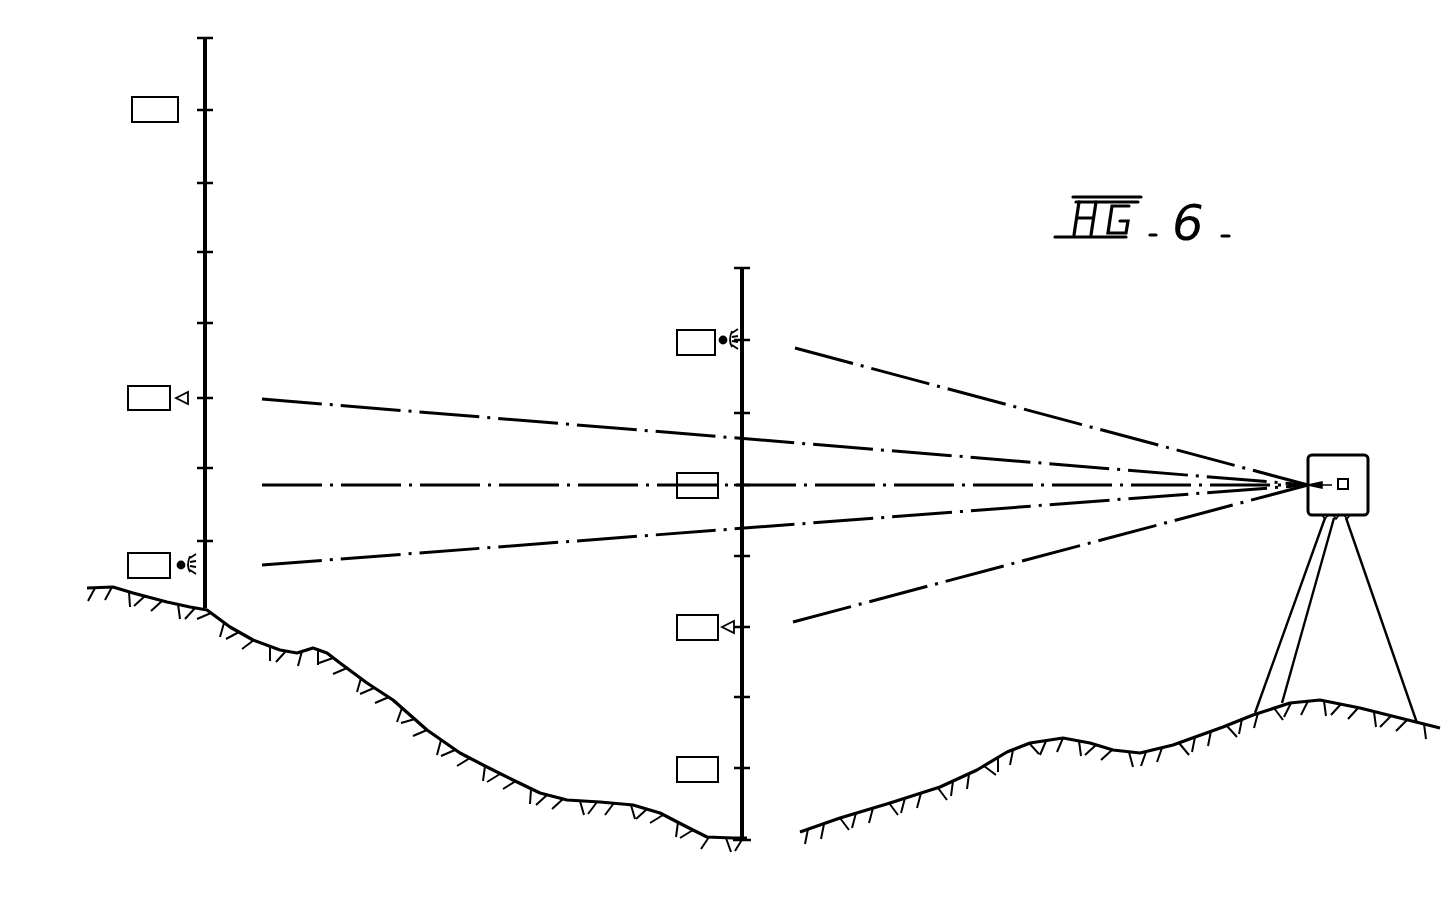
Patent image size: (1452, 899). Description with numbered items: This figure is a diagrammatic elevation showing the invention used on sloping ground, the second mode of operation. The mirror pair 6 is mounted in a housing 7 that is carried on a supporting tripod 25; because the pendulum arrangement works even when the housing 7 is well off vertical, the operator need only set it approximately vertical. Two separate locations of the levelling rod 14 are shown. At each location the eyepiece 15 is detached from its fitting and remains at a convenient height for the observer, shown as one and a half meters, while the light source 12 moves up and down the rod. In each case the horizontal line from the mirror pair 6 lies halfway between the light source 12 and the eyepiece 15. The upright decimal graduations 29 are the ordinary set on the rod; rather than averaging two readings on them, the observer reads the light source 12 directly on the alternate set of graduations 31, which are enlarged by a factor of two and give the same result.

The mirror pair 6 is at (1344, 479).
The housing 7 is at (1318, 457).
The light source 12 is at (178, 553).
The levelling rod 14 is at (205, 148).
The eyepiece 15 is at (178, 388).
The supporting tripod 25 is at (1325, 520).
The graduations 29 is at (240, 98).
The alternate set of graduations 31 is at (166, 96).